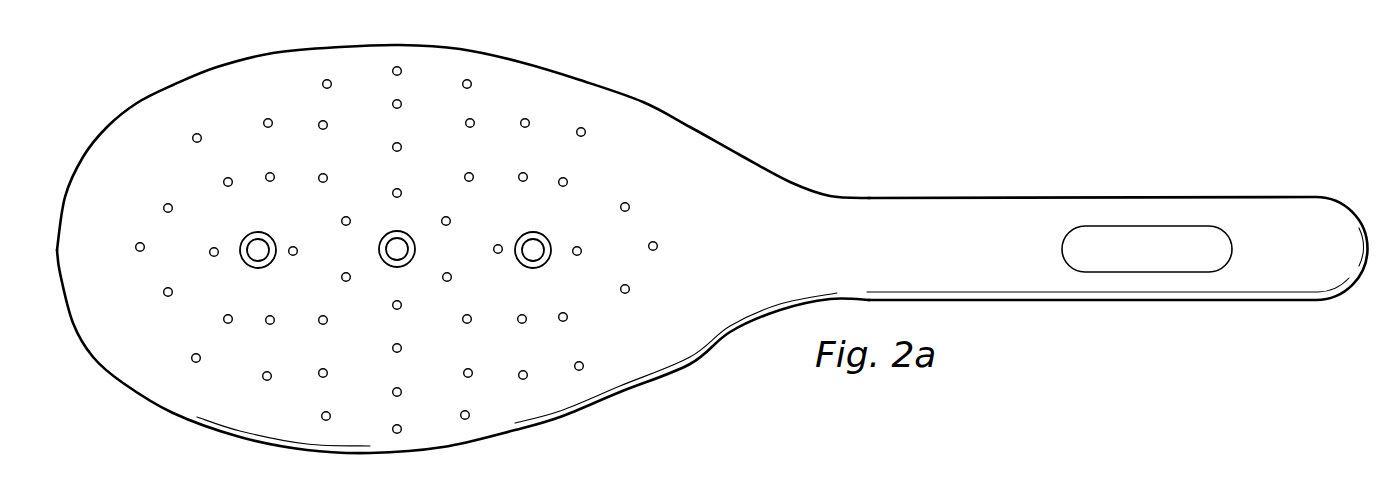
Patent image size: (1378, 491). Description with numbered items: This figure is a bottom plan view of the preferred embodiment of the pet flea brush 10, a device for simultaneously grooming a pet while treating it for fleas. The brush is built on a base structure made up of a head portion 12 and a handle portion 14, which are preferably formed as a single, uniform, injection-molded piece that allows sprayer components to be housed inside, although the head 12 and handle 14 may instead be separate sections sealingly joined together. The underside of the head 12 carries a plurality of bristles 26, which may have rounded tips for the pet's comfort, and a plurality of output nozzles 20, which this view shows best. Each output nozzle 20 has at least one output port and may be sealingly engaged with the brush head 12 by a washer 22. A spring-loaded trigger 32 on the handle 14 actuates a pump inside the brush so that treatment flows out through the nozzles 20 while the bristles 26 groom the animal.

The pet flea brush 10 is at (712, 253).
The head portion 12 is at (520, 61).
The handle portion 14 is at (1117, 201).
The output nozzle 20 is at (533, 250).
The washer 22 is at (552, 260).
The bristle 26 is at (195, 363).
The spring-loaded trigger 32 is at (1142, 240).